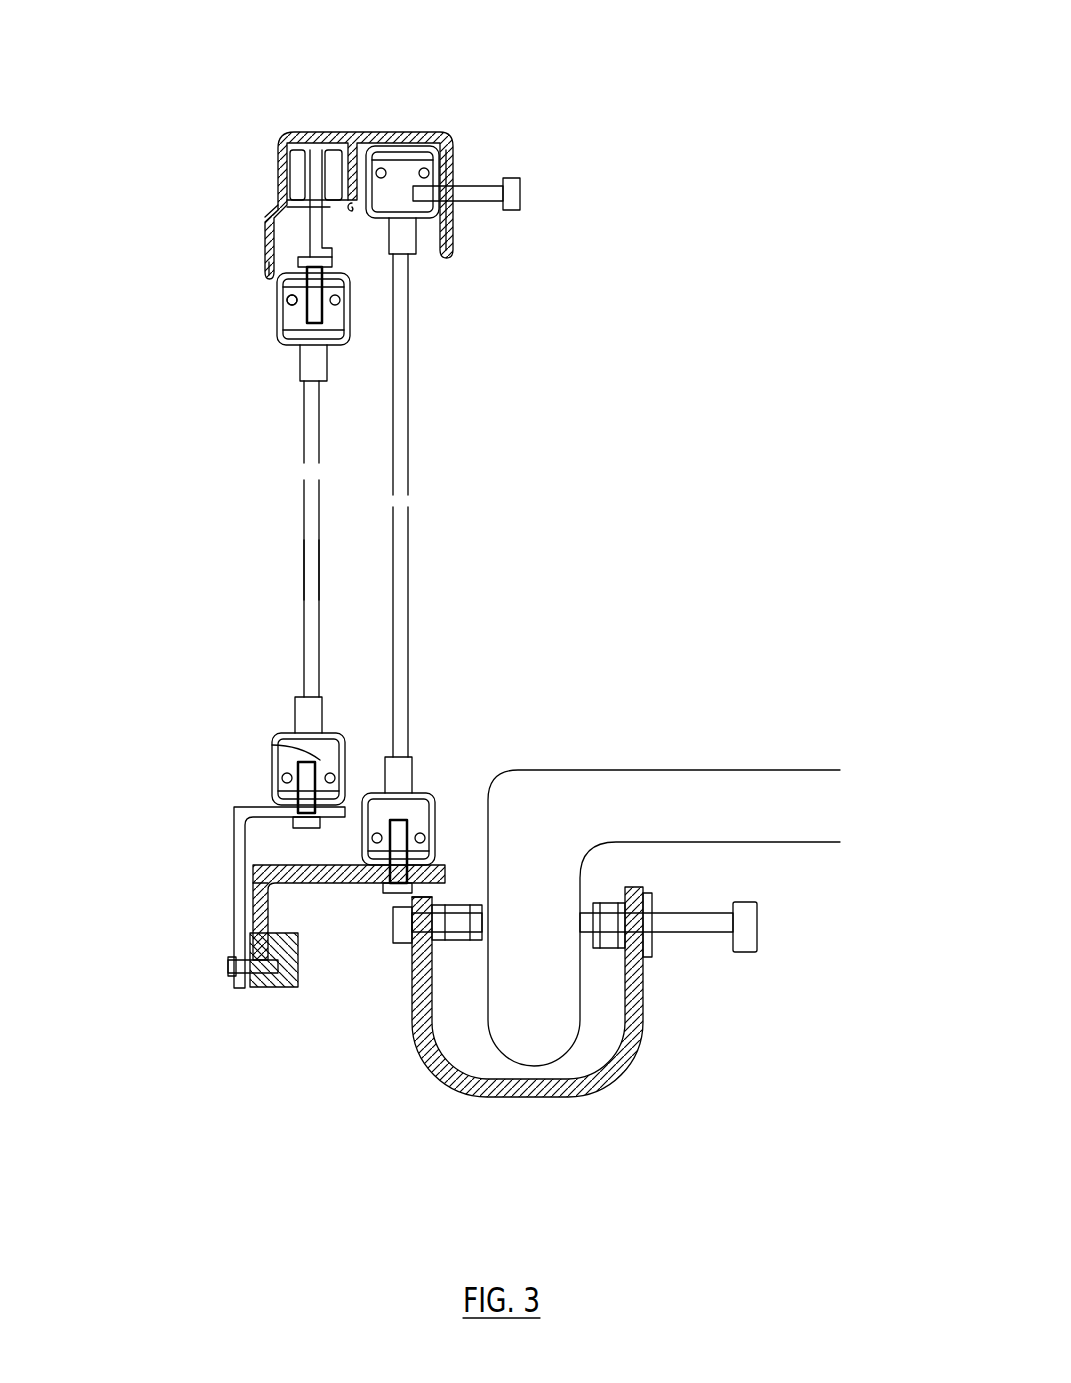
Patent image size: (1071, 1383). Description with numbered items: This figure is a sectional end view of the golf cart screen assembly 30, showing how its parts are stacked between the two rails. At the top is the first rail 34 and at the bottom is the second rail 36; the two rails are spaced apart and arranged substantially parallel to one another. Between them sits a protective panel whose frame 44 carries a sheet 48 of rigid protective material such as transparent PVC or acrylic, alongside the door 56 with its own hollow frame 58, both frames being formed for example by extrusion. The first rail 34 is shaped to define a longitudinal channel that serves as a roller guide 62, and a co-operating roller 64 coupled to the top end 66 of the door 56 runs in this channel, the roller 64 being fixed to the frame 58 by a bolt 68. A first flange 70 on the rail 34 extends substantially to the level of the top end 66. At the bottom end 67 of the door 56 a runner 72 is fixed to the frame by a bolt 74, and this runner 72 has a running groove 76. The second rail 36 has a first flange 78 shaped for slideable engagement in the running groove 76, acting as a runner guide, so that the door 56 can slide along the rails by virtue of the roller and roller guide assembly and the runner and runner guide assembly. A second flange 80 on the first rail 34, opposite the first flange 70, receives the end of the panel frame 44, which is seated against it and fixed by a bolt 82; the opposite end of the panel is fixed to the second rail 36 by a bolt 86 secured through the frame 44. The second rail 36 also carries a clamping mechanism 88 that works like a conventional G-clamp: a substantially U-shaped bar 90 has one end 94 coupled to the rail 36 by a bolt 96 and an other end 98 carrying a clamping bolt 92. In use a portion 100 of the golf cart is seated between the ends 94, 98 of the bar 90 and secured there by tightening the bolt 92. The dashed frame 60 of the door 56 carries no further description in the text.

The screen assembly 30 is at (240, 100).
The first rail 34 is at (374, 126).
The second rail 36 is at (250, 913).
The frame 44 is at (445, 158).
The sheet 48 is at (405, 300).
The door 56 is at (298, 442).
The frame 58 is at (285, 308).
The tube wall 60 is at (313, 562).
The roller guide 62 is at (311, 160).
The roller 64 is at (300, 180).
The top end 66 is at (288, 297).
The bottom end 67 is at (275, 795).
The bolt 68 is at (290, 325).
The first flange 70 is at (265, 243).
The runner 72 is at (231, 832).
The bolt 74 is at (300, 760).
The running groove 76 is at (248, 940).
The first flange 78 is at (258, 885).
The second flange 80 is at (455, 228).
The bolt 82 is at (522, 195).
The bolt 86 is at (400, 930).
The clamping mechanism 88 is at (700, 1103).
The U-shaped bar 90 is at (526, 1097).
The clamping bolt 92 is at (748, 925).
The one end 94 is at (412, 950).
The bolt 96 is at (383, 895).
The other end 98 is at (640, 887).
The portion 100 is at (560, 830).